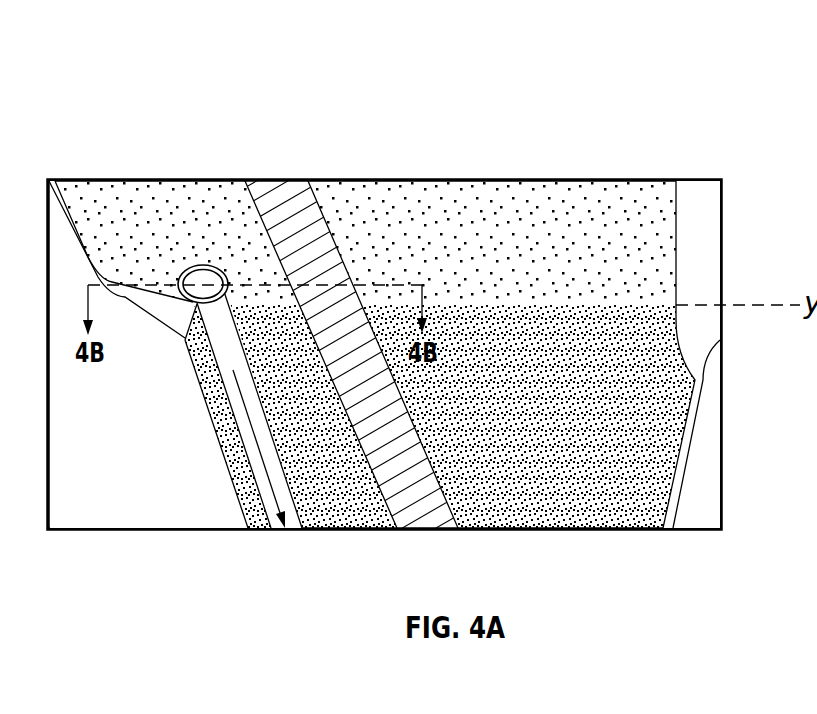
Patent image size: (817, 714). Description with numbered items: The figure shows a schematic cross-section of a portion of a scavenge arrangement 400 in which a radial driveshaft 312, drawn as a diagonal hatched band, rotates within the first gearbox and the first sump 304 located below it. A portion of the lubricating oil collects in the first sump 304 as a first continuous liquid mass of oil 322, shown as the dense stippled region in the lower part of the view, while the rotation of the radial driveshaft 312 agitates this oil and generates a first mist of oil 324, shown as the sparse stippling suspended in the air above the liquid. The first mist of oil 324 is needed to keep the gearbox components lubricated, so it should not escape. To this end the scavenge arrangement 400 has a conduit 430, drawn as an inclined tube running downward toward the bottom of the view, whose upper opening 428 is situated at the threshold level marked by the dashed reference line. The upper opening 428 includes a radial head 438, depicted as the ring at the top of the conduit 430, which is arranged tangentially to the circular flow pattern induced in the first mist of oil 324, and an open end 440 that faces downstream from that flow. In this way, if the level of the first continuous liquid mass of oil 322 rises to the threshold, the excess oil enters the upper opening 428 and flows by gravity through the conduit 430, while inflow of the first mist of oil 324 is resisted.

The scavenge arrangement 400 is at (114, 89).
The first sump 304 is at (585, 280).
The radial driveshaft 312 is at (333, 238).
The first continuous liquid mass of oil 322 is at (642, 513).
The first mist of oil 324 is at (595, 197).
The upper opening 428 is at (178, 252).
The conduit 430 is at (220, 424).
The radial head 438 is at (200, 266).
The open end 440 is at (195, 290).